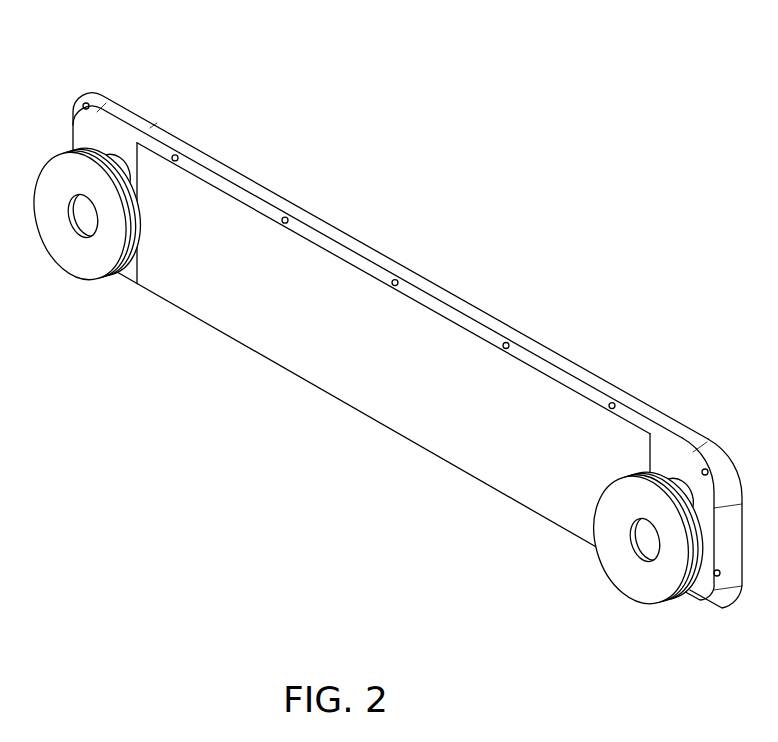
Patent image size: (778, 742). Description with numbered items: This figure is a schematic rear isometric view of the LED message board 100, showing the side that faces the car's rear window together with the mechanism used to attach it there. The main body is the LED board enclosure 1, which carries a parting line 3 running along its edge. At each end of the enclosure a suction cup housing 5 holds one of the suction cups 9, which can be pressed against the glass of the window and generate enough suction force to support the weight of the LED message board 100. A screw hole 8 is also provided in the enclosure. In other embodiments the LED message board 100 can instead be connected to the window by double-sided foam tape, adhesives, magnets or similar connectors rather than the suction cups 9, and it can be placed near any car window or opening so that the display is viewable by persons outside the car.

The LED message board 100 is at (522, 93).
The LED board enclosure 1 is at (244, 196).
The parting line 3 is at (652, 433).
The suction cup housing 5 is at (91, 160).
The screw hole 8 is at (508, 343).
The suction cups 9 is at (73, 250).